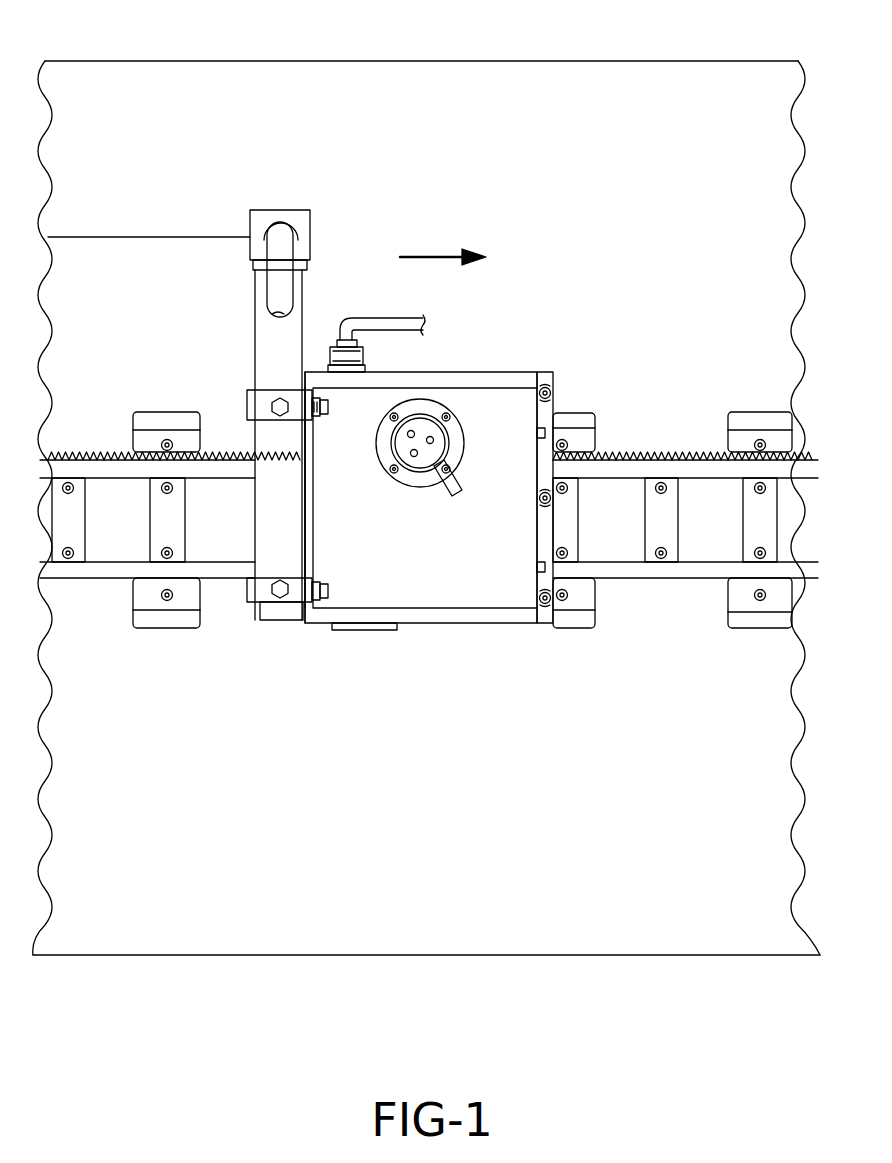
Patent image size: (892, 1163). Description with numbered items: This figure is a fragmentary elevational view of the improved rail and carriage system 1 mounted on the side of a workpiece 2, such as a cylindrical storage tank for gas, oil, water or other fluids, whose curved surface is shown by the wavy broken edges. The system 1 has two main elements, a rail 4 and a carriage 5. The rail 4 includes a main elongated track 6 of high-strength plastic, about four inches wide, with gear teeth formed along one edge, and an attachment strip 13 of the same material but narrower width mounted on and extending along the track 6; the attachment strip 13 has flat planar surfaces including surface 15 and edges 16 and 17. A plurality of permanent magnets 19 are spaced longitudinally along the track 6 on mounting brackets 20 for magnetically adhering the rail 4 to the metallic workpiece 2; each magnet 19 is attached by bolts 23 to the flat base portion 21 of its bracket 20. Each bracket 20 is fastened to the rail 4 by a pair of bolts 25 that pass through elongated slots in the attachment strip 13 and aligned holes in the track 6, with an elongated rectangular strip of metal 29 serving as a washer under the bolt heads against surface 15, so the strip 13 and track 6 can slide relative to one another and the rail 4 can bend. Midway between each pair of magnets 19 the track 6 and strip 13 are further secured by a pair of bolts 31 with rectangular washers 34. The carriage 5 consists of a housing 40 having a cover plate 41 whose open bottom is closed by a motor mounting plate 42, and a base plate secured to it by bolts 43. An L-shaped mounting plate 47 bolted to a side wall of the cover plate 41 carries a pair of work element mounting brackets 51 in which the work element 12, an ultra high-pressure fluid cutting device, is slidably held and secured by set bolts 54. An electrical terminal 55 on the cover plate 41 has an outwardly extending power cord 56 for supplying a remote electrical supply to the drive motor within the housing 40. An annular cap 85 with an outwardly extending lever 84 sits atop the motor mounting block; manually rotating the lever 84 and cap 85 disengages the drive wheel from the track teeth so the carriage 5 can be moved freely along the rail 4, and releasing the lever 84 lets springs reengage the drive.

The rail and carriage system 1 is at (300, 702).
The workpiece 2 is at (455, 78).
The rail 4 is at (170, 523).
The carriage 5 is at (451, 511).
The track 6 is at (662, 462).
The work element 12 is at (272, 332).
The attachment strip 13 is at (685, 495).
The second flat planar surface 15 is at (620, 492).
The edge 16 is at (698, 478).
The edge 17 is at (622, 566).
The permanent magnets 19 is at (150, 416).
The mounting brackets 20 is at (742, 441).
The flat base portion 21 is at (140, 441).
The bolts 23 is at (757, 598).
The bolts 25 is at (68, 487).
The strip of metal 29 is at (165, 522).
The bolts 31 is at (659, 556).
The washers 34 is at (660, 525).
The housing 40 is at (423, 628).
The cover plate 41 is at (475, 592).
The motor mounting plate 42 is at (550, 380).
The bolts 43 is at (550, 603).
The L-shaped mounting plate 47 is at (303, 530).
The work element mounting brackets 51 is at (258, 598).
The set bolts 54 is at (278, 404).
The electrical terminal 55 is at (341, 341).
The power cord 56 is at (386, 323).
The lever 84 is at (455, 490).
The annular cap 85 is at (431, 446).